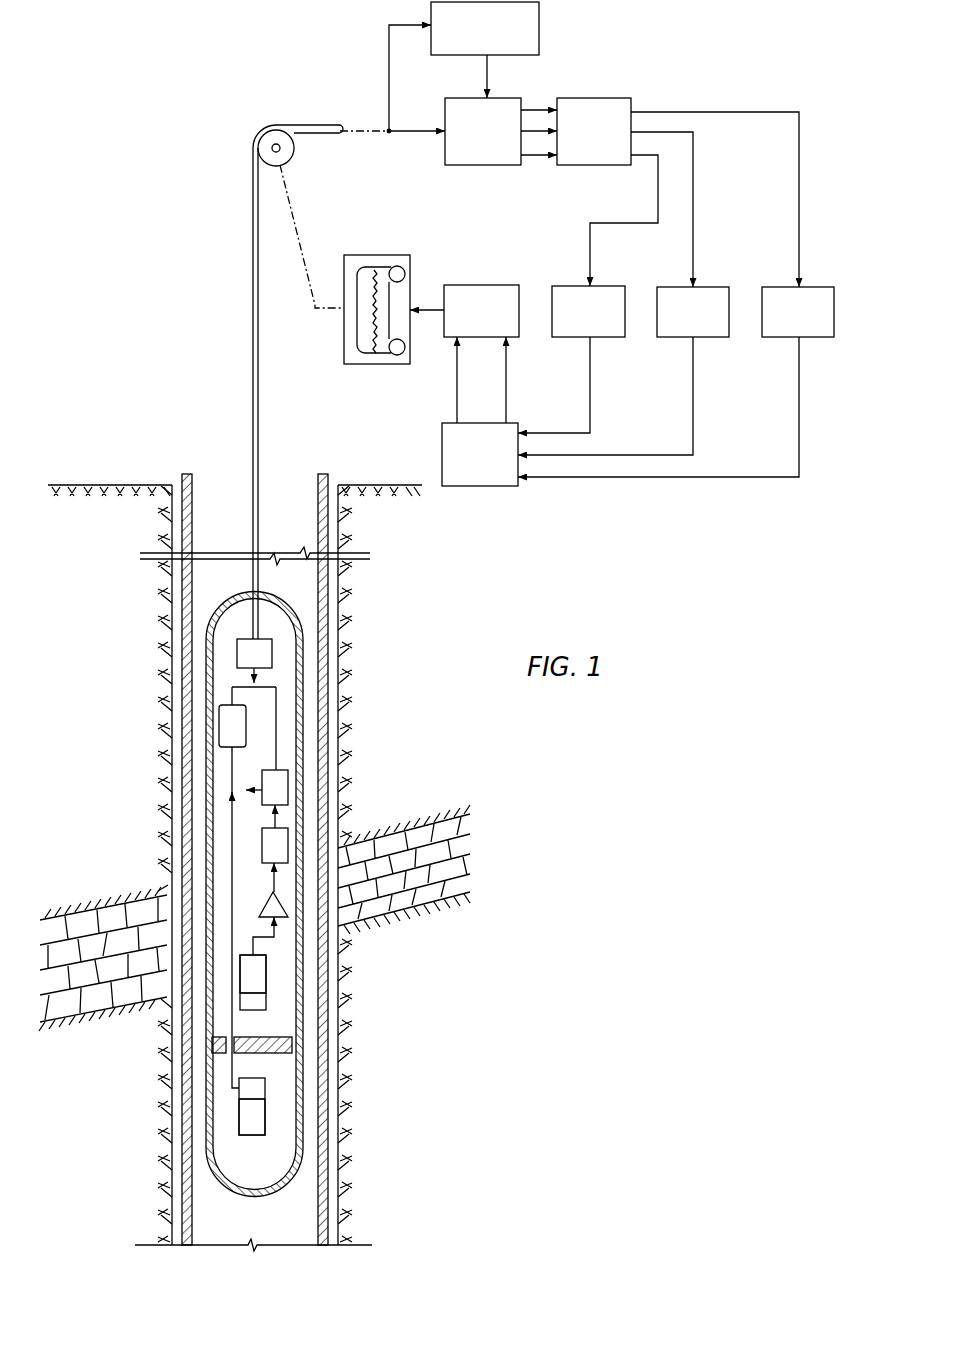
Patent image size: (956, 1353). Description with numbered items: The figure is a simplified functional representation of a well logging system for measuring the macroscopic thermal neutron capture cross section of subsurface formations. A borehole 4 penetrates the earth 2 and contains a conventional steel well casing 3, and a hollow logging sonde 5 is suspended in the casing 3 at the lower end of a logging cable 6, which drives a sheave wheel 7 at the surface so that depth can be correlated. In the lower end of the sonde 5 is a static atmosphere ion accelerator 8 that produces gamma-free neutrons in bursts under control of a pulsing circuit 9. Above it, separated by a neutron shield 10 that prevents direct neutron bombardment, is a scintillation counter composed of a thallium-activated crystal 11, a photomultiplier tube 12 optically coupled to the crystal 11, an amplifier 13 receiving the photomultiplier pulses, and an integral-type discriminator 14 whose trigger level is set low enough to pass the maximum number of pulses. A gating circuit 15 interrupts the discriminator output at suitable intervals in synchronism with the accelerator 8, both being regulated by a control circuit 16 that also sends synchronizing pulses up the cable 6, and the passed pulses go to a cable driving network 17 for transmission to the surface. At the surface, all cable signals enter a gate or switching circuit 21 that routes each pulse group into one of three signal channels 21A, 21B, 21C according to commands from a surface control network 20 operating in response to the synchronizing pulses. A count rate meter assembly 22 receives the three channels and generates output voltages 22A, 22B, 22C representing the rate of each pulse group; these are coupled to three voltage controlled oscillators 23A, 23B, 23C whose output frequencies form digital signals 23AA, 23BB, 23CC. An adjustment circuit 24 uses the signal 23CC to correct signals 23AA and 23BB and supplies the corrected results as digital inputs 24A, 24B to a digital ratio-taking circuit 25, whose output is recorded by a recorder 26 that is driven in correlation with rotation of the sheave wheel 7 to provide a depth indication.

The earth 2 is at (375, 761).
The steel well casing 3 is at (330, 478).
The borehole 4 is at (340, 711).
The logging sonde 5 is at (296, 612).
The logging cable 6 is at (262, 387).
The sheave wheel 7 is at (296, 152).
The static atmosphere ion accelerator 8 is at (239, 1115).
The pulsing circuit 9 is at (265, 1090).
The neutron shield 10 is at (290, 1045).
The crystal 11 is at (266, 1003).
The photomultiplier tube 12 is at (240, 976).
The amplifier 13 is at (262, 910).
The integral-type discriminator 14 is at (254, 918).
The gating circuit 15 is at (288, 788).
The control circuit 16 is at (219, 727).
The cable driving network 17 is at (272, 656).
The surface control network 20 is at (540, 27).
The gate or switching circuit 21 is at (490, 97).
The signal channel 21A is at (537, 106).
The signal channel 21B is at (537, 133).
The signal channel 21C is at (543, 158).
The count rate meter assembly 22 is at (605, 98).
The output voltage 22A is at (688, 110).
The output voltage 22B is at (683, 132).
The output voltage 22C is at (656, 193).
The voltage controlled oscillator 23A is at (818, 286).
The voltage controlled oscillator 23B is at (715, 286).
The voltage controlled oscillator 23C is at (612, 285).
The digital signal 23AA is at (799, 437).
The digital signal 23BB is at (693, 400).
The digital signal 23CC is at (590, 402).
The adjustment circuit 24 is at (486, 487).
The digital input 24A is at (456, 392).
The digital input 24B is at (506, 390).
The digital ratio-taking circuit 25 is at (484, 285).
The recorder 26 is at (381, 253).